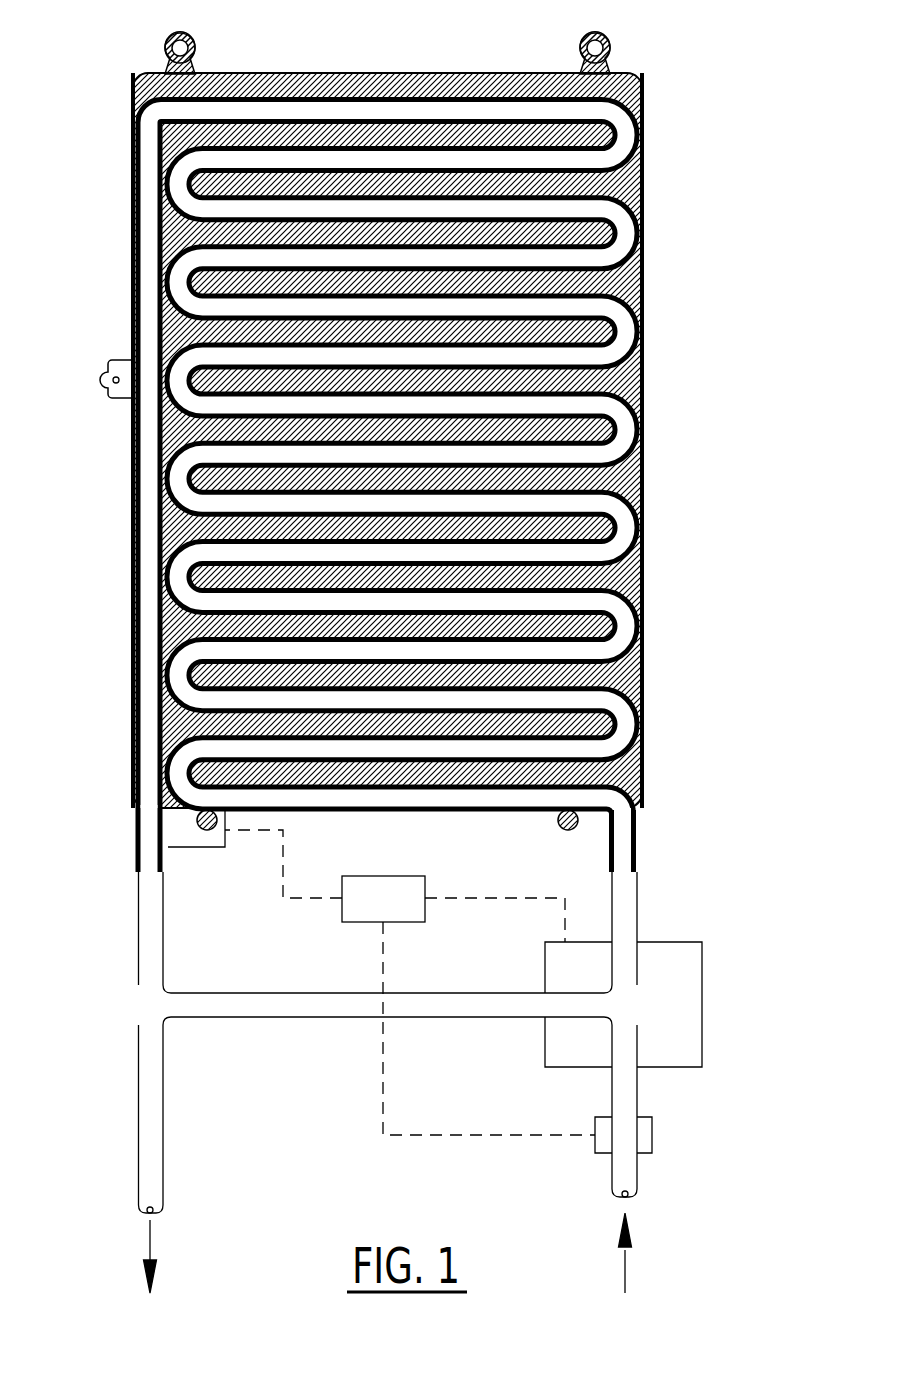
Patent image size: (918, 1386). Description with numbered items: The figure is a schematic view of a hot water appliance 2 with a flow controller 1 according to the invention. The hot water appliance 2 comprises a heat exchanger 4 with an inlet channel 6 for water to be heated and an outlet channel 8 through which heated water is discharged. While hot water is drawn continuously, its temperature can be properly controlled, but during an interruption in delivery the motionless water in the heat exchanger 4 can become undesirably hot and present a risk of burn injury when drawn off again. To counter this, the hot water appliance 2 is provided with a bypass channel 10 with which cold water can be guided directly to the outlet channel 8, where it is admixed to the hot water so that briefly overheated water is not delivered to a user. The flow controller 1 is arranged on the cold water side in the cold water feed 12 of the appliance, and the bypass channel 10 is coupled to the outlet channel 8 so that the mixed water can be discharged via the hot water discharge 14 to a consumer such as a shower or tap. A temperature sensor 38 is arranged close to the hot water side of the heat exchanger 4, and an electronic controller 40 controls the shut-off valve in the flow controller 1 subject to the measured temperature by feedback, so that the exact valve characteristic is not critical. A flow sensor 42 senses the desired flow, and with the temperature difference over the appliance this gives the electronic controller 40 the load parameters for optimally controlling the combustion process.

The flow controller 1 is at (685, 970).
The hot water appliance 2 is at (715, 675).
The heat exchanger 4 is at (628, 385).
The inlet channel 6 is at (580, 840).
The outlet channel 8 is at (118, 843).
The bypass channel 10 is at (303, 1017).
The cold water feed 12 is at (627, 1178).
The hot water discharge 14 is at (148, 1165).
The temperature sensor 38 is at (197, 840).
The electronic controller 40 is at (376, 890).
The flow sensor 42 is at (643, 1137).